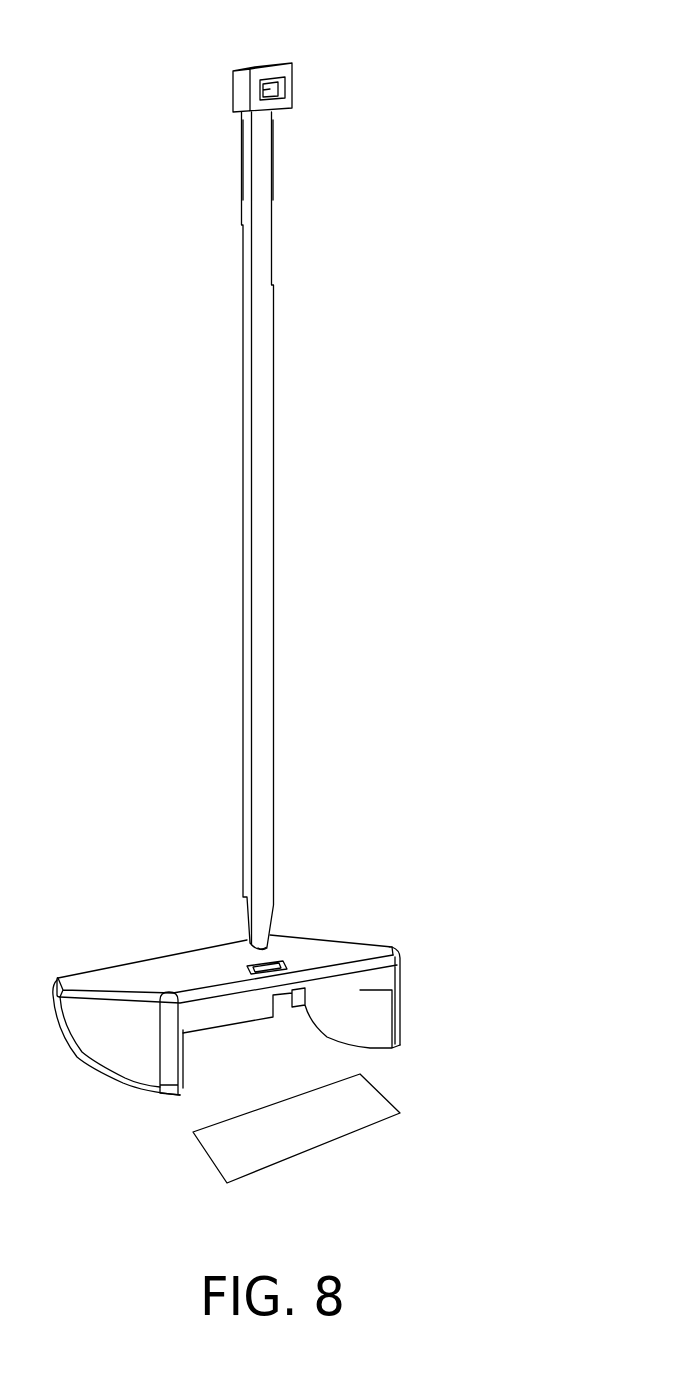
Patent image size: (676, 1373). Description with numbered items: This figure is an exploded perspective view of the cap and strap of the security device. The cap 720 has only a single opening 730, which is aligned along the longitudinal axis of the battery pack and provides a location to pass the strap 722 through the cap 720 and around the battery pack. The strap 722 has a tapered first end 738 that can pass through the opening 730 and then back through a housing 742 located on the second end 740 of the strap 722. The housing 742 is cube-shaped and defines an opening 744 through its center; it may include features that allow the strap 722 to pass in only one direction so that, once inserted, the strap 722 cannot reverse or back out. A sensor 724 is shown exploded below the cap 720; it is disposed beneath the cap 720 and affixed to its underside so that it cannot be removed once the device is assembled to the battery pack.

The cap 720 is at (168, 982).
The strap 722 is at (259, 540).
The sensor 724 is at (348, 1097).
The opening 730 is at (250, 963).
The first end 738 is at (272, 918).
The second end 740 is at (263, 130).
The housing 742 is at (242, 101).
The opening 744 is at (265, 80).